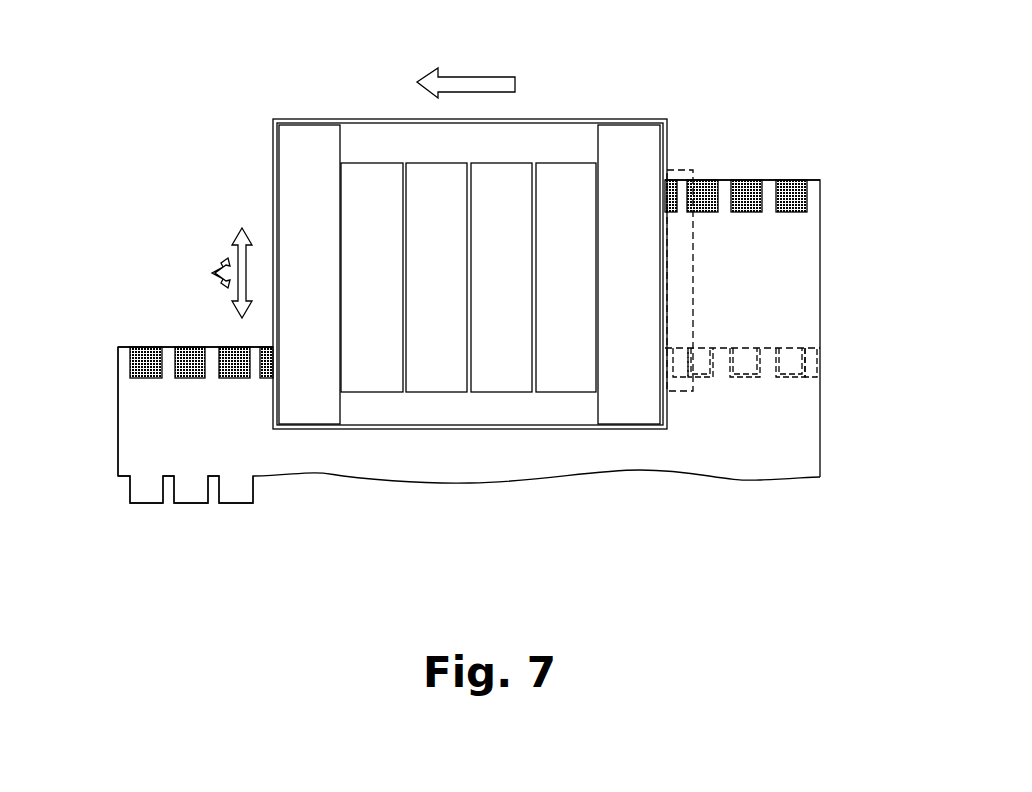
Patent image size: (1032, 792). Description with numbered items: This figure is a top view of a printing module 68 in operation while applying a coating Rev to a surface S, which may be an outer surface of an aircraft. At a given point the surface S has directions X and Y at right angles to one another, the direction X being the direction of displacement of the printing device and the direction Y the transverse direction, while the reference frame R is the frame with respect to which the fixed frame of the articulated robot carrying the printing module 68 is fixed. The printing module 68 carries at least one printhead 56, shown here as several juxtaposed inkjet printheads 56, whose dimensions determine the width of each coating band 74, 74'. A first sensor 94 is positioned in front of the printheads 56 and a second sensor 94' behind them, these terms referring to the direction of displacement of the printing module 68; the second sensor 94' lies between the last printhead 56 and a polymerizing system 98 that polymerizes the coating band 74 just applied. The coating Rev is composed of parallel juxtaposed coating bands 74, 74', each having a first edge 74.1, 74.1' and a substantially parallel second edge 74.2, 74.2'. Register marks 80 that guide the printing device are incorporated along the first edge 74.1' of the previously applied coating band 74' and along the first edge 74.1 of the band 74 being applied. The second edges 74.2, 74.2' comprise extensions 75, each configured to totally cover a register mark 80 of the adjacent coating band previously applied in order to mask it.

The printing module 68 is at (670, 129).
The printhead 56 is at (563, 382).
The first sensor 94 is at (306, 330).
The second sensor 94' is at (629, 327).
The coating band 74 is at (766, 328).
The first edge 74.1 is at (753, 148).
The second edge 74.2 is at (784, 378).
The coating band 74' is at (440, 365).
The first edge 74.1' is at (150, 340).
The second edge 74.2' is at (135, 503).
The register marks 80 is at (232, 347).
The polymerizing system 98 is at (697, 243).
The extensions 75 is at (187, 498).
The surface S is at (131, 431).
The coating Rev is at (742, 448).
The direction X is at (194, 590).
The direction Y is at (194, 590).
The reference frame R is at (212, 590).